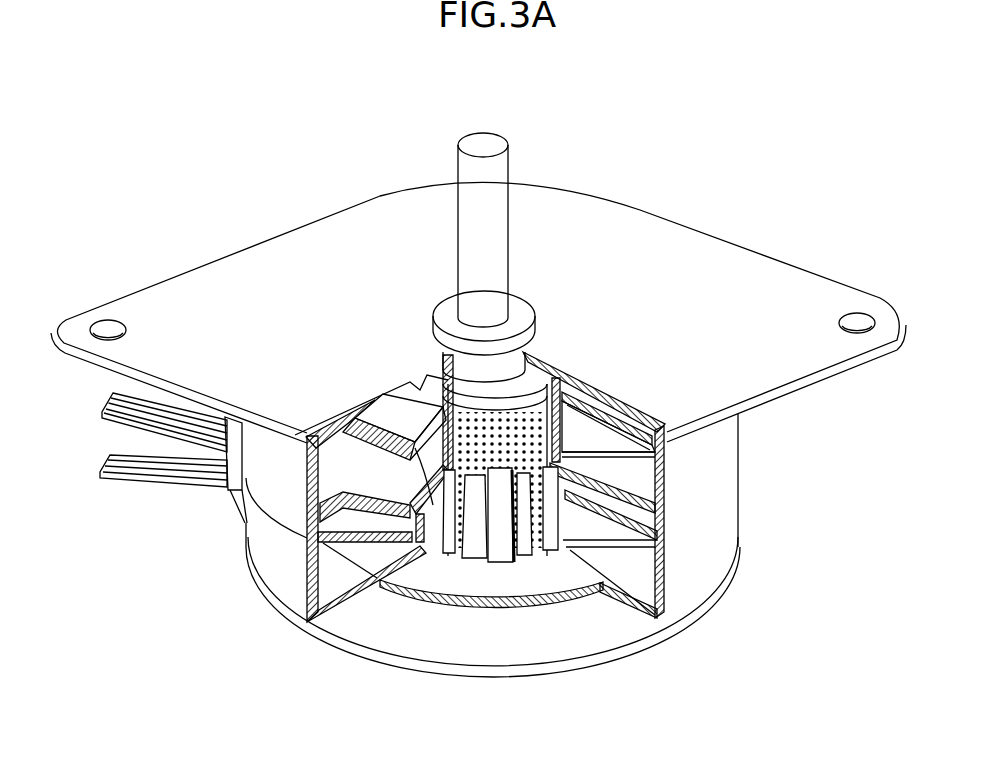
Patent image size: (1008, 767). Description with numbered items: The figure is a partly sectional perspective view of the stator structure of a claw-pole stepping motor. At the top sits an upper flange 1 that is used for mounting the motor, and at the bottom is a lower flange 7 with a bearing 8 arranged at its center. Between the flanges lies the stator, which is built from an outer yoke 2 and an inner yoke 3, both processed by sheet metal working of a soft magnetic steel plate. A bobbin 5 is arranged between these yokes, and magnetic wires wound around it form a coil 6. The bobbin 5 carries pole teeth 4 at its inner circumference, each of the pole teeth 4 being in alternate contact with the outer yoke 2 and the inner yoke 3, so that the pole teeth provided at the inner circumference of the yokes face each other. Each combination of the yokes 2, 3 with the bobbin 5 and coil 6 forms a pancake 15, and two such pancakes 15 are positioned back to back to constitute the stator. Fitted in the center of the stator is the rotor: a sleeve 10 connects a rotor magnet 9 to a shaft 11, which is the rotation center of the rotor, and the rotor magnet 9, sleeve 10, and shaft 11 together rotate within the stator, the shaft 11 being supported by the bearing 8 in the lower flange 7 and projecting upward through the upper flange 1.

The upper flange 1 is at (237, 270).
The outer yoke 2 is at (387, 418).
The inner yoke 3 is at (413, 518).
The pole teeth 4 is at (500, 517).
The bobbin 5 is at (613, 597).
The coil 6 is at (667, 483).
The lower flange 7 is at (420, 637).
The bearing 8 is at (453, 305).
The rotor magnet 9 is at (528, 405).
The sleeve 10 is at (493, 390).
The shaft 11 is at (497, 170).
The pancakes 15 is at (287, 490).